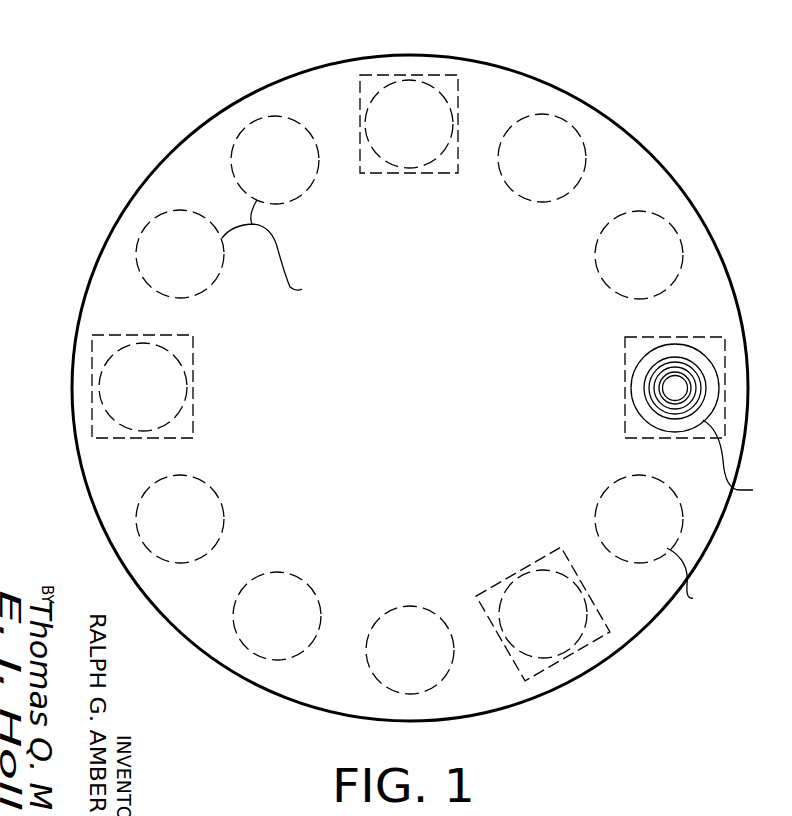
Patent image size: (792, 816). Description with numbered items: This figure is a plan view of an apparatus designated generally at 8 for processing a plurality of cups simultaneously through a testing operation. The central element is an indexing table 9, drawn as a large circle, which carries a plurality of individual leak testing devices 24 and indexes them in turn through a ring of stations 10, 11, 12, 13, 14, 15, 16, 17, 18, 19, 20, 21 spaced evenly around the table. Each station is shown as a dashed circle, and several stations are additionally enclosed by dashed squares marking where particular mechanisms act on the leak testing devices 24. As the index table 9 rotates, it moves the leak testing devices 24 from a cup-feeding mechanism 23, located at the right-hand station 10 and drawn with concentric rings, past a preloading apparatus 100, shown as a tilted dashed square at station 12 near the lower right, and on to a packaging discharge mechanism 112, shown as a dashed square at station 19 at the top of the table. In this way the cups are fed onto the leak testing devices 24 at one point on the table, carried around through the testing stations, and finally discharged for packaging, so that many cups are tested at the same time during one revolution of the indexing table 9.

The apparatus 8 is at (128, 130).
The indexing table 9 is at (80, 458).
The station 10 is at (115, 335).
The station 11 is at (605, 486).
The station 12 is at (522, 561).
The station 13 is at (425, 594).
The station 14 is at (317, 566).
The station 15 is at (247, 492).
The station 16 is at (230, 397).
The station 17 is at (255, 294).
The station 18 is at (318, 229).
The station 19 is at (422, 206).
The station 20 is at (517, 224).
The station 21 is at (590, 282).
The cup-feeding mechanism 23 is at (688, 337).
The leak testing device 24 is at (502, 404).
The preloading apparatus 100 is at (588, 647).
The packaging discharge mechanism 112 is at (423, 75).